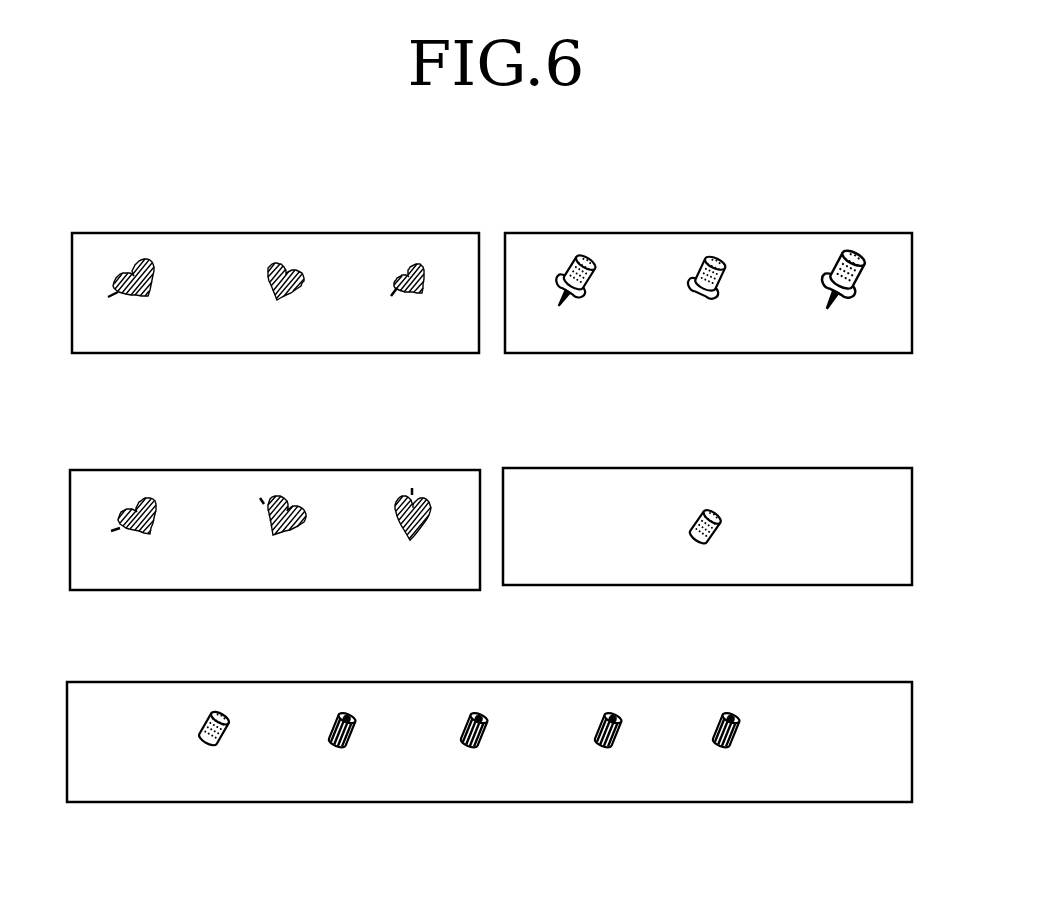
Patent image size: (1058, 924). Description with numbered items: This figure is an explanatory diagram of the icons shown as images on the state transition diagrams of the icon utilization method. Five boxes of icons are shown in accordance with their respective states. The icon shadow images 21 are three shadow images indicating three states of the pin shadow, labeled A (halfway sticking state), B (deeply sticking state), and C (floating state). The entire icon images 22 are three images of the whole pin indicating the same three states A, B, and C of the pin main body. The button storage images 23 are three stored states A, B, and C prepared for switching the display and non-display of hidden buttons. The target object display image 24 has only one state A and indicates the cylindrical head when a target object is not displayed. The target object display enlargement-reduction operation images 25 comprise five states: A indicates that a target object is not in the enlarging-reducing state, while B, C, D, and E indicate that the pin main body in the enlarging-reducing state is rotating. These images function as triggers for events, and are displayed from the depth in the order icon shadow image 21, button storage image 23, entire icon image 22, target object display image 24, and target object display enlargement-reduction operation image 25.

The icon shadow image 21 is at (273, 233).
The entire icon image 22 is at (708, 233).
The button storage image 23 is at (273, 470).
The target object display image 24 is at (707, 468).
The target object display enlargement-reduction operation image 25 is at (425, 682).